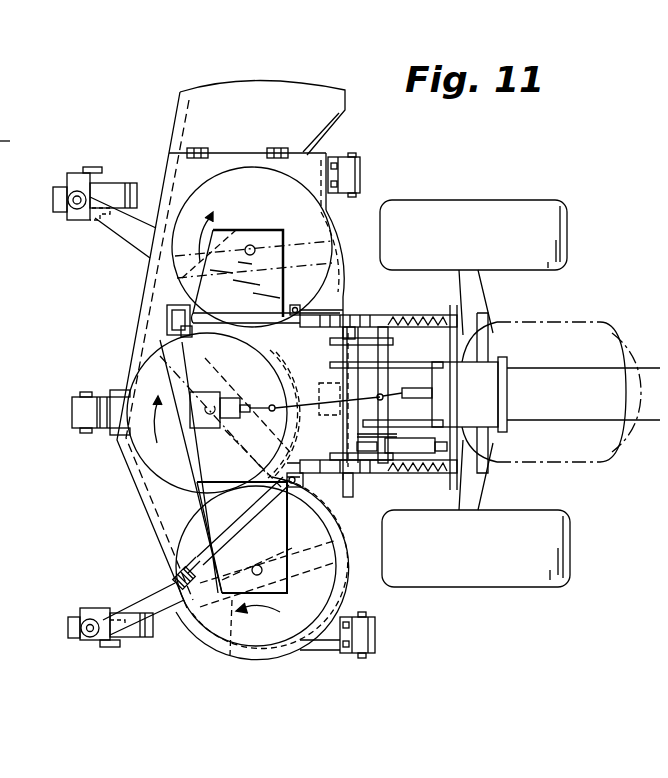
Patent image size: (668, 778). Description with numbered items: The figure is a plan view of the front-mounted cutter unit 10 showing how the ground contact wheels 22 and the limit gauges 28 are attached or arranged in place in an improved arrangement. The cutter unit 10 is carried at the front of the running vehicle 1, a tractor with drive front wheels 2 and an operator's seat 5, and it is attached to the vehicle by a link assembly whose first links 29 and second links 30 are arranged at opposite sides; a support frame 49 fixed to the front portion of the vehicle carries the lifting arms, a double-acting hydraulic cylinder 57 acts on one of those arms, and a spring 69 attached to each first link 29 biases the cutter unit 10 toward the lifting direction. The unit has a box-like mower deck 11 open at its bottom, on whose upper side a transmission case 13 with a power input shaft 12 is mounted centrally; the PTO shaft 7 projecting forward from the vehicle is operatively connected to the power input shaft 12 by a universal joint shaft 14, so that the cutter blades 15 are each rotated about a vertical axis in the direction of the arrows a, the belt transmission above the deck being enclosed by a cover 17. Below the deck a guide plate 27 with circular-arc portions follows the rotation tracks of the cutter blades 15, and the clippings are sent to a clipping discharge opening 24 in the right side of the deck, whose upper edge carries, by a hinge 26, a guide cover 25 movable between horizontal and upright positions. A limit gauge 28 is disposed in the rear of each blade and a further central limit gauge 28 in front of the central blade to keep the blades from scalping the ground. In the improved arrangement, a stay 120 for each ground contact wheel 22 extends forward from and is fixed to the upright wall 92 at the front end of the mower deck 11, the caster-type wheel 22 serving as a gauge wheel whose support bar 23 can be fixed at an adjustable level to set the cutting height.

The running vehicle 1 is at (623, 468).
The front wheels 2 is at (492, 580).
The operator's seat 5 is at (590, 323).
The PTO shaft 7 is at (427, 390).
The cutter unit 10 is at (96, 350).
The mower deck 11 is at (287, 640).
The power input shaft 12 is at (247, 401).
The transmission case 13 is at (168, 340).
The universal joint shaft 14 is at (325, 419).
The cutter blades 15 is at (309, 238).
The cover 17 is at (203, 502).
The ground contact wheel 22 is at (132, 187).
The support bar 23 is at (78, 207).
The clipping discharge opening 24 is at (248, 150).
The guide cover 25 is at (290, 95).
The hinge 26 is at (272, 150).
The guide plate 27 is at (302, 383).
The limit gauge 28 is at (78, 413).
The first links 29 is at (390, 314).
The second links 30 is at (277, 317).
The support frame 49 is at (416, 355).
The double-acting hydraulic cylinder 57 is at (435, 460).
The spring 69 is at (407, 317).
The upright wall 92 is at (143, 528).
The stay 120 is at (130, 230).